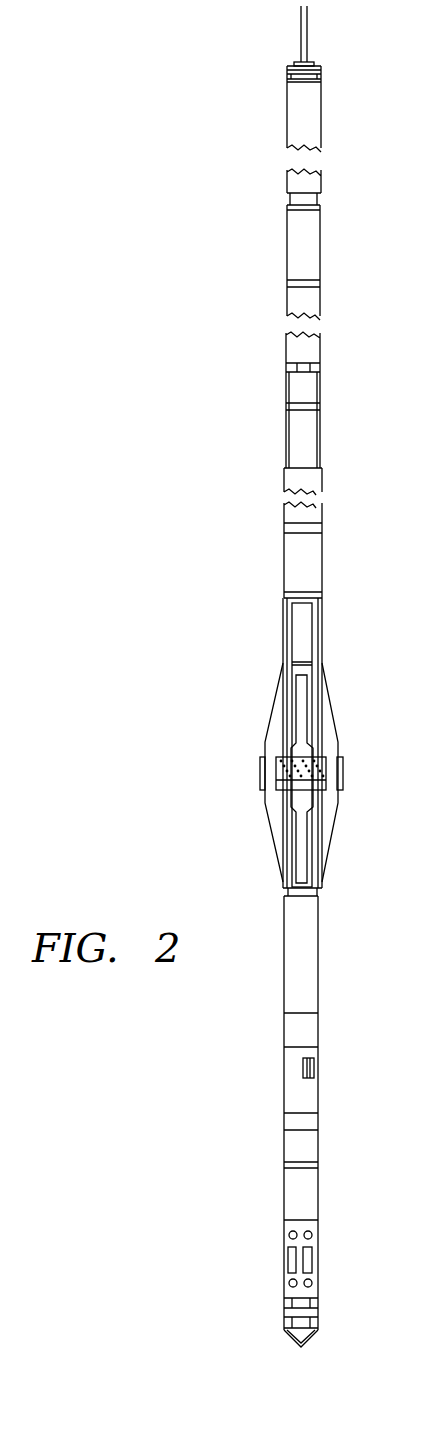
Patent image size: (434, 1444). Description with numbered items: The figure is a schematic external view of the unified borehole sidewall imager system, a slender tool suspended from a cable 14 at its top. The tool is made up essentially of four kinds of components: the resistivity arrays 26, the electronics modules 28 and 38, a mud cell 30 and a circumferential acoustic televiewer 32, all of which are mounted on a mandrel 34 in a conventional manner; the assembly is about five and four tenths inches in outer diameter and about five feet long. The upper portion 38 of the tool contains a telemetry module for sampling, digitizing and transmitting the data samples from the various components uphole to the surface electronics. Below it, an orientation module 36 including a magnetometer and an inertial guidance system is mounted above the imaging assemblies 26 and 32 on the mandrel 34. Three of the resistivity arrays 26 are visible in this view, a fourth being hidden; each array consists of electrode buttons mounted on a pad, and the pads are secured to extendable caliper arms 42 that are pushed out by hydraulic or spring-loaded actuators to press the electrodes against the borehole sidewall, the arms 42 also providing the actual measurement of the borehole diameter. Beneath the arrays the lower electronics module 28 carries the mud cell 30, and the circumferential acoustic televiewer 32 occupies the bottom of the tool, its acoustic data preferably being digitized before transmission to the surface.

The cable 14 is at (308, 32).
The upper portion 38 is at (322, 107).
The orientation module 36 is at (322, 258).
The mandrel 34 is at (322, 558).
The extendable caliper arms 42 is at (268, 722).
The resistivity arrays 26 is at (258, 770).
The electronics module 28 is at (320, 956).
The mud cell 30 is at (317, 1066).
The circumferential acoustic televiewer 32 is at (320, 1261).